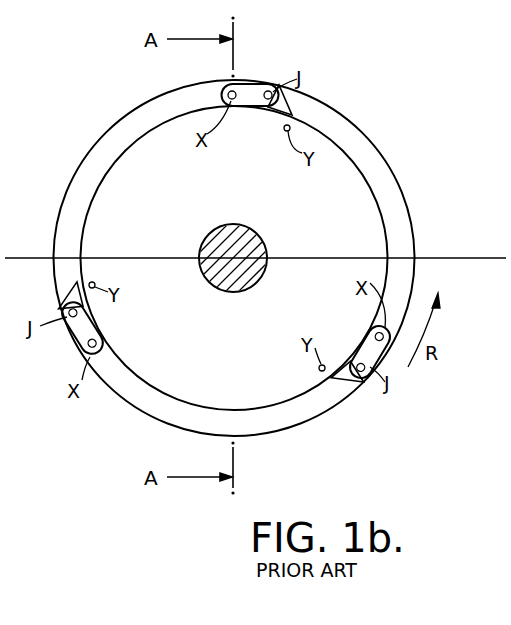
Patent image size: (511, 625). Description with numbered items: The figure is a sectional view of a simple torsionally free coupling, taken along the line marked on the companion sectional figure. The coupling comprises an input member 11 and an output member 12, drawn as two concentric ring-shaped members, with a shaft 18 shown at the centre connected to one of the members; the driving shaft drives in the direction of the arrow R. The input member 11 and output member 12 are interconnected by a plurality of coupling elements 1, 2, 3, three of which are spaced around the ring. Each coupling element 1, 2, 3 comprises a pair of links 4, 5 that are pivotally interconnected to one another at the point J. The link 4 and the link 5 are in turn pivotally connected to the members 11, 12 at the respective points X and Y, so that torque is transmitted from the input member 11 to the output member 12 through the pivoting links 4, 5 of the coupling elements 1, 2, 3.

The coupling element 1 is at (258, 81).
The coupling element 2 is at (368, 387).
The coupling element 3 is at (68, 338).
The link 4 is at (252, 104).
The link 5 is at (287, 108).
The input member 11 is at (333, 398).
The output member 12 is at (287, 402).
The shaft 18 is at (247, 285).